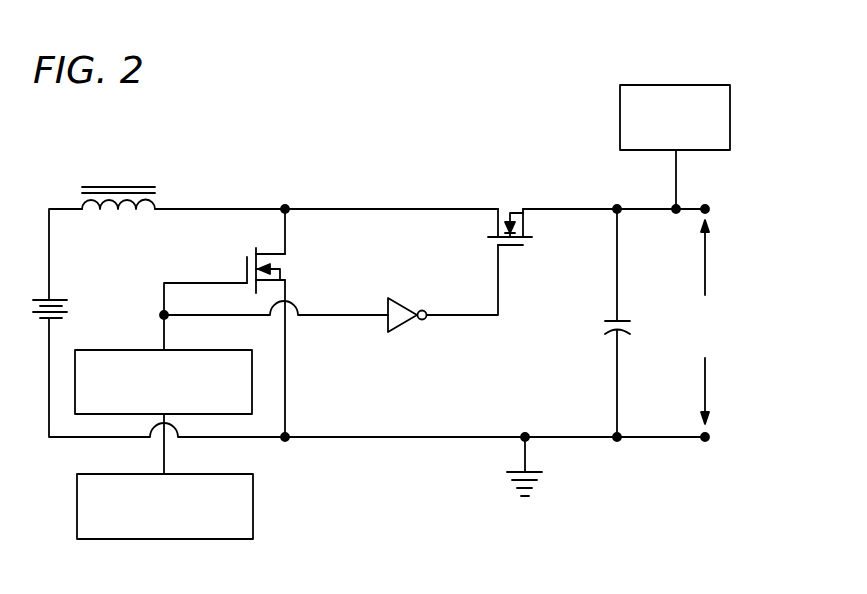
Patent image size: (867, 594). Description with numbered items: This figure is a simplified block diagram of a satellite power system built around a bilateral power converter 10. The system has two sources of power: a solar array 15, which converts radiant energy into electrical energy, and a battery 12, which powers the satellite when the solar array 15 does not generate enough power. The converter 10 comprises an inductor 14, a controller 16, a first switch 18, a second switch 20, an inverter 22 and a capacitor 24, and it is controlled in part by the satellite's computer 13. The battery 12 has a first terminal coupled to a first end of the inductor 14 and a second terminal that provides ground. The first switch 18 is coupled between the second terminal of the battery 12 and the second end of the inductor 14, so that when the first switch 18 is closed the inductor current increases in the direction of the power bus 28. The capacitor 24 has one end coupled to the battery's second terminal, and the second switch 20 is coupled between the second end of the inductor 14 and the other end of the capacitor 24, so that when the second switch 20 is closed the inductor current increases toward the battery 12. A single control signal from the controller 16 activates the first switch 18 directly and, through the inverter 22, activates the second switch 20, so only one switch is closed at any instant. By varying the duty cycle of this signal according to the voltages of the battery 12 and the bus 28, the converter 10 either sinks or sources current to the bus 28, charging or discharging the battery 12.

The bilateral power converter 10 is at (390, 178).
The battery 12 is at (58, 298).
The computer 13 is at (253, 502).
The inductor 14 is at (130, 186).
The solar array 15 is at (685, 85).
The controller 16 is at (218, 350).
The first switch 18 is at (284, 271).
The second switch 20 is at (527, 223).
The inverter 22 is at (403, 301).
The capacitor 24 is at (605, 328).
The power bus 28 is at (555, 207).